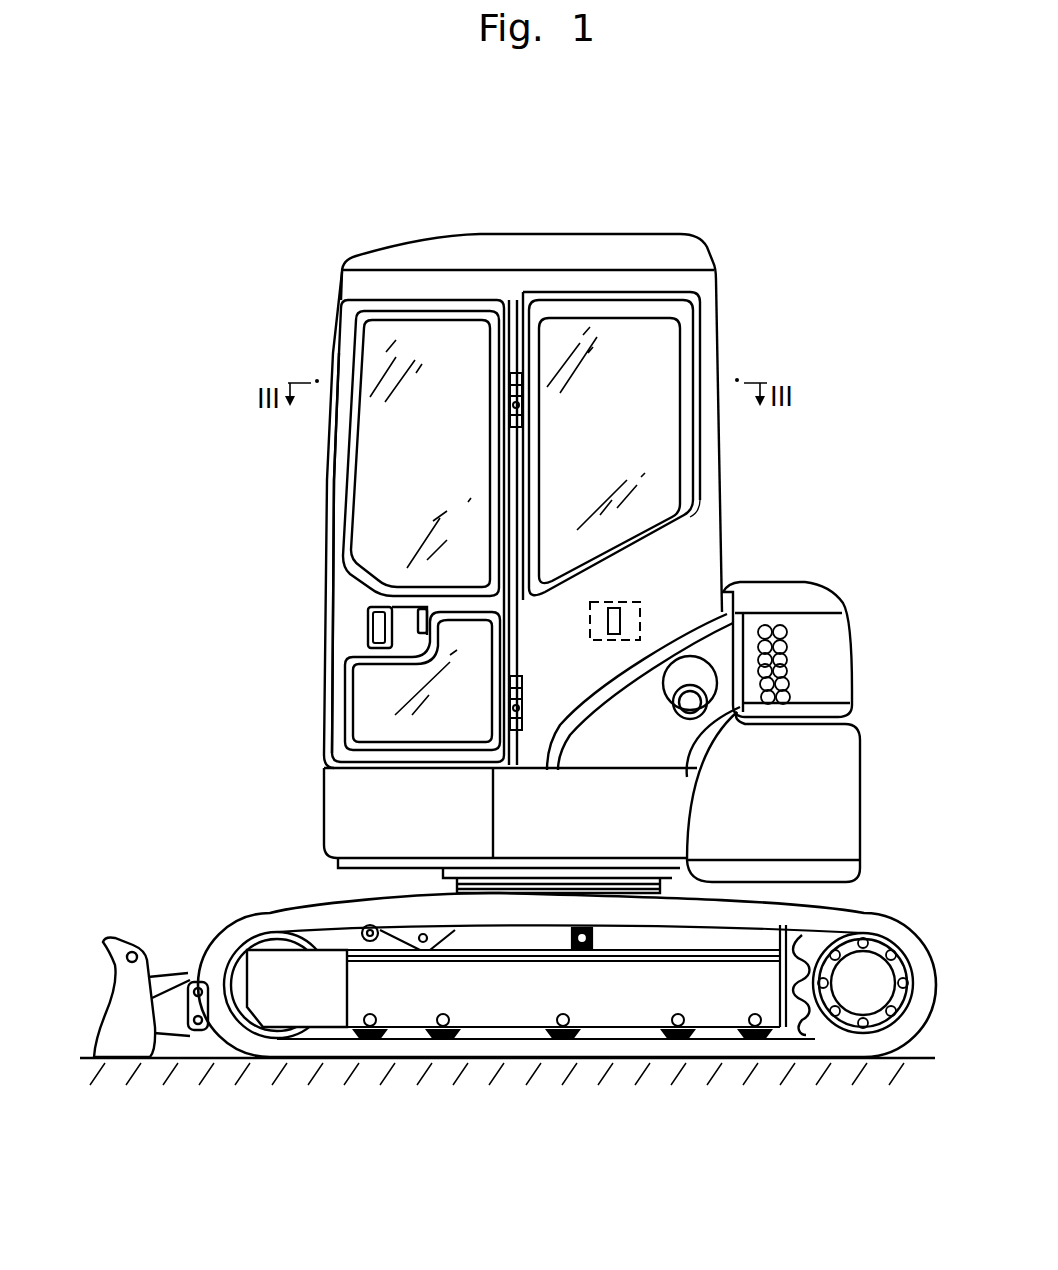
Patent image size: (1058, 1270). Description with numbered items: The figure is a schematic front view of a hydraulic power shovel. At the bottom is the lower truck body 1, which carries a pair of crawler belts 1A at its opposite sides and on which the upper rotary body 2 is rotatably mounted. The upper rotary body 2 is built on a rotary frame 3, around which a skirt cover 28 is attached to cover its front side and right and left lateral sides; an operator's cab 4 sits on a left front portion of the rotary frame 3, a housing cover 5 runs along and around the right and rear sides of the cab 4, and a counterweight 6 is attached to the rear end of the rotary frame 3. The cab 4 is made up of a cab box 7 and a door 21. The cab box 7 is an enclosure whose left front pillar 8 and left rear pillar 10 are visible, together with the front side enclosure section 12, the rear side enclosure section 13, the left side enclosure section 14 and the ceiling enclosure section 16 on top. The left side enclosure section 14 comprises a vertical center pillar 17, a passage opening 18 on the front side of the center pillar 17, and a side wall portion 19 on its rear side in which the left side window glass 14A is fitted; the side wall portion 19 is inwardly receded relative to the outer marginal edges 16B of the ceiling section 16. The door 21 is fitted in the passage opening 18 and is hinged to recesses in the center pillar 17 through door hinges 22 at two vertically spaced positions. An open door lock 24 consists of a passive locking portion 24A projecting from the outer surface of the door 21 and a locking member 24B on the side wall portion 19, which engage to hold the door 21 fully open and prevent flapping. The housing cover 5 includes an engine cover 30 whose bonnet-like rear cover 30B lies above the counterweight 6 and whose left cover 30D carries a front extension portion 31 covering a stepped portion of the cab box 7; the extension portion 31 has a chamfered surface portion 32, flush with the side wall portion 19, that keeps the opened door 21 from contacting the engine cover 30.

The lower truck body 1 is at (232, 928).
The crawler belt 1A is at (882, 916).
The upper rotary body 2 is at (849, 550).
The rotary frame 3 is at (340, 866).
The operator's cab 4 is at (721, 298).
The housing cover 5 is at (840, 587).
The counterweight 6 is at (848, 790).
The cab box 7 is at (314, 545).
The left front pillar 8 is at (336, 343).
The left rear pillar 10 is at (707, 356).
The front side enclosure section 12 is at (332, 498).
The rear side enclosure section 13 is at (720, 465).
The left side enclosure section 14 is at (699, 542).
The left side window glass 14A is at (663, 430).
The ceiling enclosure section 16 is at (641, 236).
The outer marginal edge of ceiling section 16B is at (341, 286).
The center pillar 17 is at (530, 306).
The passage opening 18 is at (338, 596).
The side wall portion 19 is at (710, 491).
The door 21 is at (343, 628).
The door hinge 22 is at (513, 407).
The open door lock 24 is at (645, 597).
The passive locking portion 24A is at (420, 625).
The locking member 24B is at (637, 625).
The skirt cover 28 is at (362, 799).
The engine cover 30 is at (842, 614).
The rear cover 30B is at (733, 652).
The left cover 30D is at (783, 670).
The front extension portion 31 is at (722, 685).
The chamfered surface portion 32 is at (667, 738).